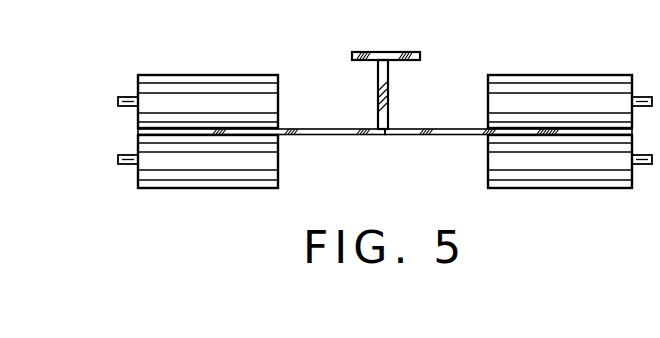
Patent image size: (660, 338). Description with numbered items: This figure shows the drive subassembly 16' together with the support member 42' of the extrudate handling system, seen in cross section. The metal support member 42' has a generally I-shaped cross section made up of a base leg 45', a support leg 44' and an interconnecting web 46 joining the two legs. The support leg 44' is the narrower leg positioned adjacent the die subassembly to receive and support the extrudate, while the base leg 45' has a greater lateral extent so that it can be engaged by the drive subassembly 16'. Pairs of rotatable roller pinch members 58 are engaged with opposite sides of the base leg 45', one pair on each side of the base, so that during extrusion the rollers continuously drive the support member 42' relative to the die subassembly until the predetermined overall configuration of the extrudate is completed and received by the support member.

The drive subassembly 16' is at (356, 117).
The support member 42' is at (261, 159).
The support leg 44' is at (368, 35).
The base leg 45' is at (508, 159).
The interconnecting web 46 is at (377, 79).
The rotatable roller pinch members 58 is at (138, 178).